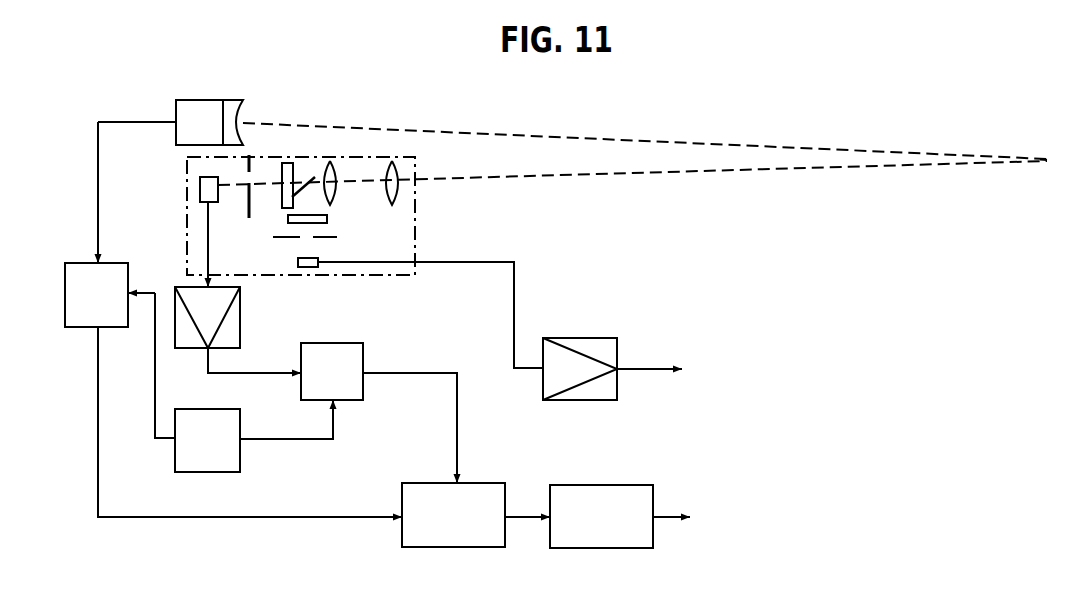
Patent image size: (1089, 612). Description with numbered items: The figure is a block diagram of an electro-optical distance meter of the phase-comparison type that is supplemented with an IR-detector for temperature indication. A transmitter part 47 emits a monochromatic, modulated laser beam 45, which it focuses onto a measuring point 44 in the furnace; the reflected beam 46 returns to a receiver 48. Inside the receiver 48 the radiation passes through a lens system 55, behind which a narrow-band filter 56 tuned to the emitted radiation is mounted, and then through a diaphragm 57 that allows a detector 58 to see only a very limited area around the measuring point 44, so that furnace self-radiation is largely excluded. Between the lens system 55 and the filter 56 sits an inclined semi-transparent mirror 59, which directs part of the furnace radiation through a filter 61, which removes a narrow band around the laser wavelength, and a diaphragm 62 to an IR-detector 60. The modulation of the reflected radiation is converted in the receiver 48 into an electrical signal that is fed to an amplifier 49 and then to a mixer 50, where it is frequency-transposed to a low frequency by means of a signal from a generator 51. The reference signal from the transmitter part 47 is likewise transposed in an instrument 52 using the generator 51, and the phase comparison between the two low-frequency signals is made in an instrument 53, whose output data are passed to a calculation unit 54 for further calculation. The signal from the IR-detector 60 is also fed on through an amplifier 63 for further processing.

The measuring point 44 is at (1059, 158).
The emitted beam 45 is at (555, 105).
The reflected beam 46 is at (548, 178).
The transmitter part 47 is at (180, 112).
The receiver 48 is at (197, 222).
The amplifier 49 is at (242, 312).
The mixer 50 is at (327, 348).
The generator 51 is at (238, 418).
The instrument 52 is at (95, 318).
The instrument 53 is at (475, 492).
The calculation unit 54 is at (625, 492).
The lens system 55 is at (338, 180).
The filter 56 is at (286, 163).
The diaphragm 57 is at (249, 155).
The detector 58 is at (200, 186).
The semi-transparent mirror 59 is at (310, 183).
The IR-detector 60 is at (318, 262).
The filter 61 is at (327, 219).
The diaphragm 62 is at (278, 238).
The amplifier 63 is at (600, 343).